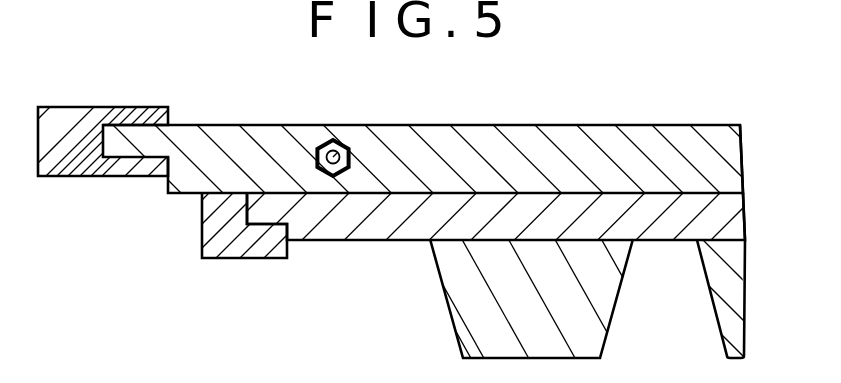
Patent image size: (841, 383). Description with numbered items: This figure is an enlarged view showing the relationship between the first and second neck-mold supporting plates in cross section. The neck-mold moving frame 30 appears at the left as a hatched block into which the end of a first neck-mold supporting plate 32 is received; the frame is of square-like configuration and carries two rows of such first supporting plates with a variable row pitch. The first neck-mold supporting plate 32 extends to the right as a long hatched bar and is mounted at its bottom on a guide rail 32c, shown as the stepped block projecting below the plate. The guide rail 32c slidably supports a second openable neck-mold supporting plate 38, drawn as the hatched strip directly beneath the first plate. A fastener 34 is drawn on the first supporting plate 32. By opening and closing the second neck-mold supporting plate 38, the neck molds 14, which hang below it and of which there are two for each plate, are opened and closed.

The neck mold 14 is at (475, 327).
The neck-mold moving frame 30 is at (70, 177).
The first neck-mold supporting plate 32 is at (517, 146).
The guide rail 32c is at (232, 247).
The nut 34 is at (333, 150).
The second openable neck-mold supporting plate 38 is at (722, 227).